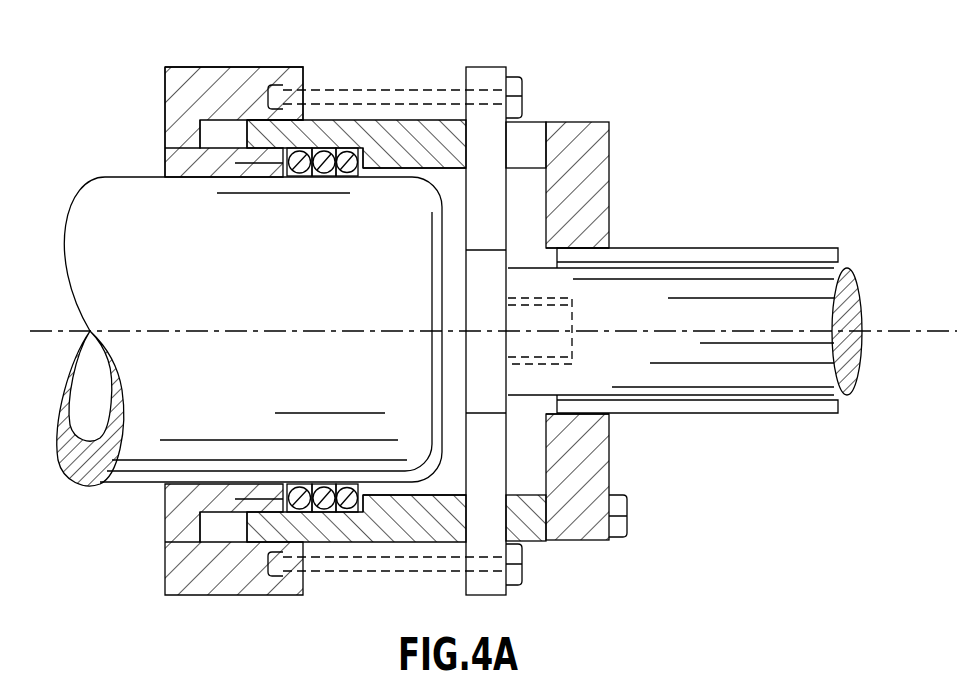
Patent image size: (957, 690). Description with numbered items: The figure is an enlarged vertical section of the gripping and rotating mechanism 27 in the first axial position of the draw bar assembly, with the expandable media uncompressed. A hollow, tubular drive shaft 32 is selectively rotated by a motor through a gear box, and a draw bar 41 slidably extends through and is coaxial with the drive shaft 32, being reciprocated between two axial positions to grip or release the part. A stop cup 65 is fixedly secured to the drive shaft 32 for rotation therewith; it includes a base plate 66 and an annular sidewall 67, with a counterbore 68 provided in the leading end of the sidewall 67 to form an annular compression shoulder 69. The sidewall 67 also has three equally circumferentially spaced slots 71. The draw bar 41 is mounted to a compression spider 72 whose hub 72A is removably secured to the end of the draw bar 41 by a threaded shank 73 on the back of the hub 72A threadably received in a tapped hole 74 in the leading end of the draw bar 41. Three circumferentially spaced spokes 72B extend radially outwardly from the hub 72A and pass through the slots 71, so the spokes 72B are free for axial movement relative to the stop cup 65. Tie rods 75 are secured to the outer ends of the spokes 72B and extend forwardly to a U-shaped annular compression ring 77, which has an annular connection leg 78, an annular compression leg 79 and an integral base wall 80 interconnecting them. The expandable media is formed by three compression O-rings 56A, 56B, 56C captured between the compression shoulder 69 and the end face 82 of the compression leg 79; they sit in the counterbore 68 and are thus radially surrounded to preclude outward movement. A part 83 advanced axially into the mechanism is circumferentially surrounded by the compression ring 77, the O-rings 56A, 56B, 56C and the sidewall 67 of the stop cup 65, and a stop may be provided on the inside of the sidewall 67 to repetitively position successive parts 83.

The gripping and rotating mechanism 27 is at (158, 602).
The drive shaft 32 is at (715, 408).
The draw bar 41 is at (640, 365).
The O-ring 56A is at (298, 178).
The O-ring 56B is at (322, 178).
The O-ring 56C is at (348, 177).
The stop cup 65 is at (604, 151).
The base plate 66 is at (608, 240).
The annular sidewall 67 is at (430, 145).
The counterbore 68 is at (272, 128).
The annular compression shoulder 69 is at (372, 150).
The slots 71 is at (532, 142).
The compression spider 72 is at (497, 438).
The hub 72A is at (482, 386).
The spokes 72B is at (485, 222).
The threaded shank 73 is at (558, 328).
The tapped hole 74 is at (520, 298).
The tie rods 75 is at (345, 88).
The compression ring 77 is at (164, 92).
The annular connection leg 78 is at (203, 76).
The annular compression leg 79 is at (220, 160).
The base wall 80 is at (170, 122).
The end face 82 is at (255, 165).
The part 83 is at (148, 458).